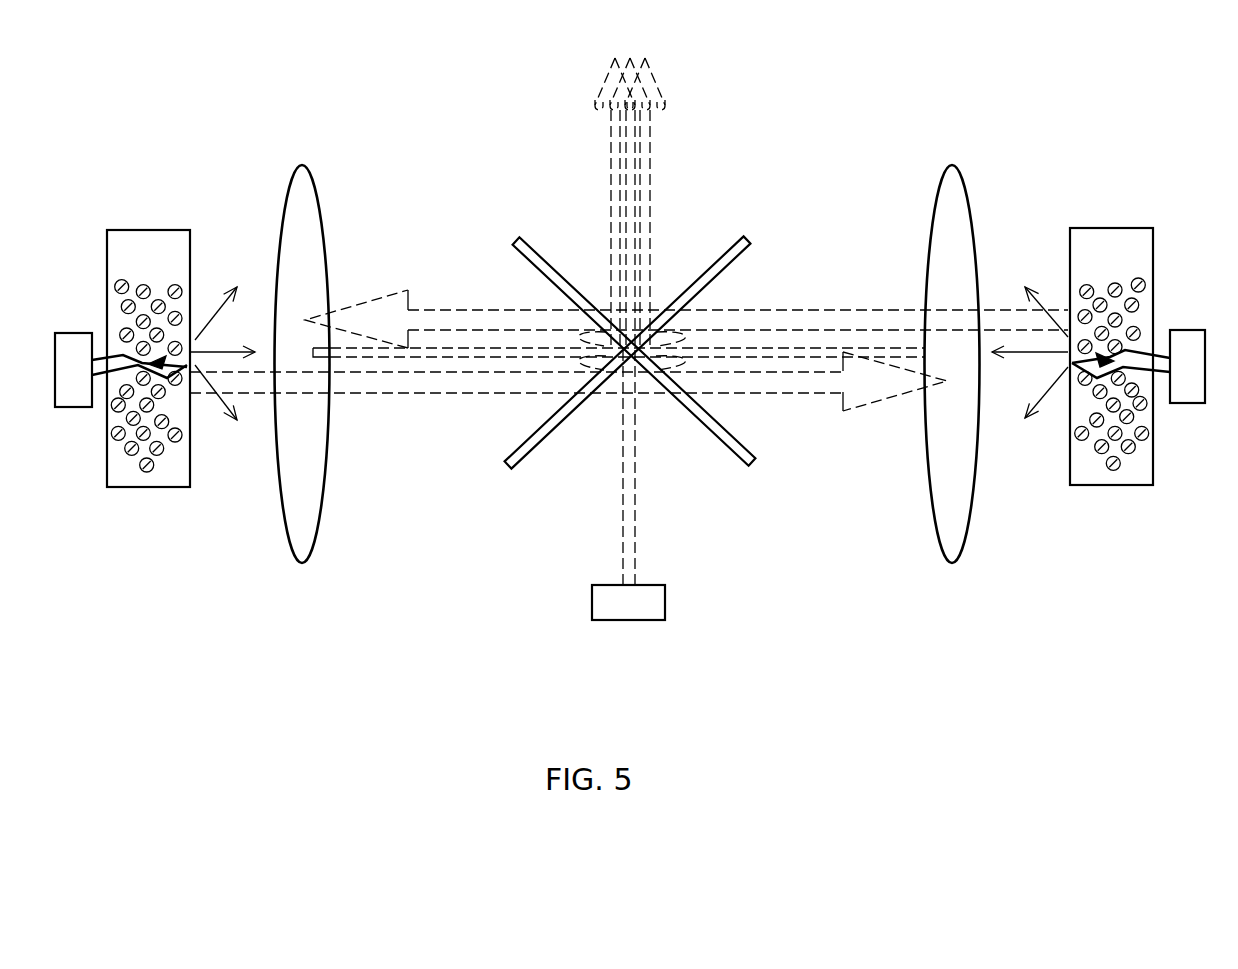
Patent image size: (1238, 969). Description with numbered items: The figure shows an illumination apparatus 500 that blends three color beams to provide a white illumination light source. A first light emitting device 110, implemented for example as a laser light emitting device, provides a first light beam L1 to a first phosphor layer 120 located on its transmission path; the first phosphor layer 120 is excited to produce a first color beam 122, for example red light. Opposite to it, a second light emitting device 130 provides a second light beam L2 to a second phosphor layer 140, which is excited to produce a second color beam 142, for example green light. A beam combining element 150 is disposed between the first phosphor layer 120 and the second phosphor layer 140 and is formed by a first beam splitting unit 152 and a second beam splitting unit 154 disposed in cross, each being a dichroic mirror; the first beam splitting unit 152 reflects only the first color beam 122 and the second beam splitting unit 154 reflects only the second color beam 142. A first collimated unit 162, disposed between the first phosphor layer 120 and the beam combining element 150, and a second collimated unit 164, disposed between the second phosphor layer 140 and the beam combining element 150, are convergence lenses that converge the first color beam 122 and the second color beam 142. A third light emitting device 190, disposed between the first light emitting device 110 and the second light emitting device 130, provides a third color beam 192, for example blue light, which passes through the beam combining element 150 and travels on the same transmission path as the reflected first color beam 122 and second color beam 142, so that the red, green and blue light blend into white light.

The first light emitting device 110 is at (73, 333).
The first phosphor layer 120 is at (148, 230).
The first color beam 122 is at (205, 330).
The second light emitting device 130 is at (1188, 333).
The second phosphor layer 140 is at (1112, 230).
The second color beam 142 is at (651, 158).
The beam combining element 150 is at (633, 426).
The first beam splitting unit 152 is at (542, 436).
The second beam splitting unit 154 is at (740, 452).
The first collimated unit 162 is at (303, 178).
The second collimated unit 164 is at (953, 178).
The third light emitting device 190 is at (592, 604).
The third color beam 192 is at (612, 140).
The first light beam L1 is at (100, 383).
The second light beam L2 is at (885, 310).
The illumination apparatus 500 is at (1120, 628).